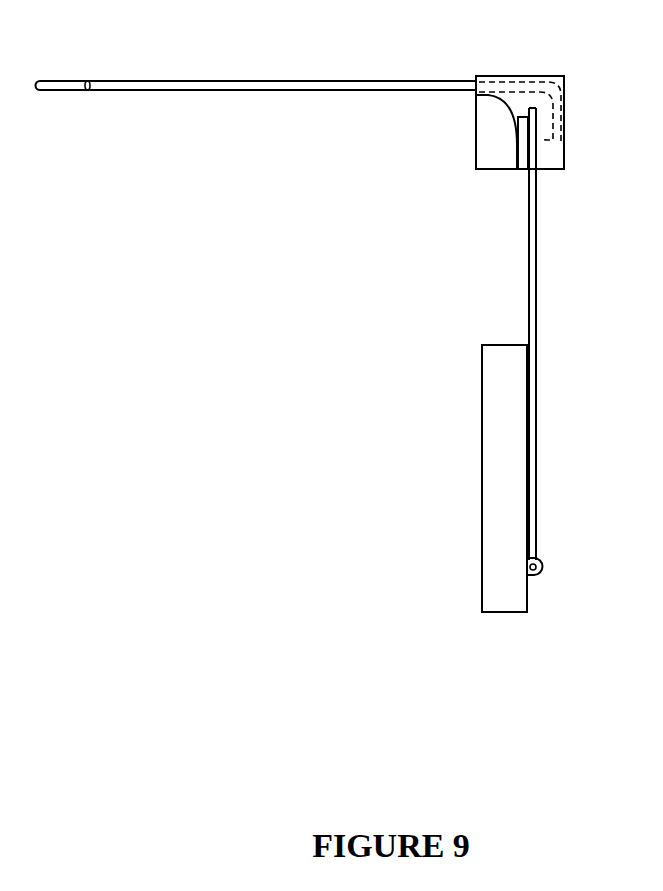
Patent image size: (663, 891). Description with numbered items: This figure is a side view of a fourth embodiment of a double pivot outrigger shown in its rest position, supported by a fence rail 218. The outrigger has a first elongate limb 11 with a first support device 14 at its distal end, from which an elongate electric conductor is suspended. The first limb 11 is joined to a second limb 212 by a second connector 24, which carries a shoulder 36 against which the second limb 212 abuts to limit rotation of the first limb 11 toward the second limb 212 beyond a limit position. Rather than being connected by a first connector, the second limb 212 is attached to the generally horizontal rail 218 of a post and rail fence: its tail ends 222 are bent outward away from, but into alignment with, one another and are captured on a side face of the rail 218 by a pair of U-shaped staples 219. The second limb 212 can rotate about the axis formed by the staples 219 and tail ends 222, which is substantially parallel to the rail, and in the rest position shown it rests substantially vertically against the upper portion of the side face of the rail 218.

The first elongate limb 11 is at (213, 80).
The first support device 14 is at (75, 80).
The second connector 24 is at (513, 105).
The shoulder 36 is at (520, 149).
The second limb 212 is at (532, 238).
The fence rail 218 is at (502, 385).
The U-shaped staples 219 is at (542, 560).
The tail ends 222 is at (540, 567).